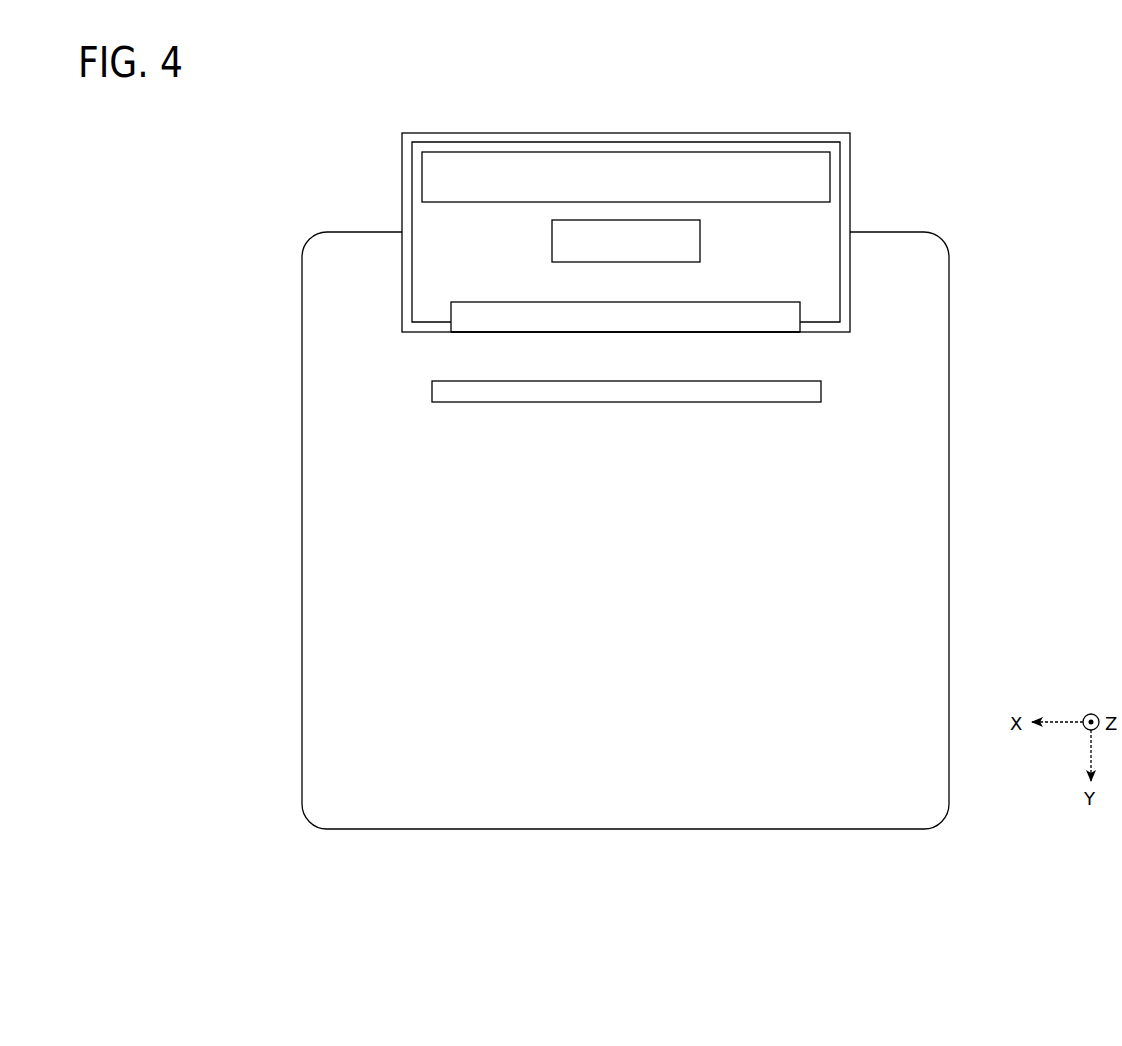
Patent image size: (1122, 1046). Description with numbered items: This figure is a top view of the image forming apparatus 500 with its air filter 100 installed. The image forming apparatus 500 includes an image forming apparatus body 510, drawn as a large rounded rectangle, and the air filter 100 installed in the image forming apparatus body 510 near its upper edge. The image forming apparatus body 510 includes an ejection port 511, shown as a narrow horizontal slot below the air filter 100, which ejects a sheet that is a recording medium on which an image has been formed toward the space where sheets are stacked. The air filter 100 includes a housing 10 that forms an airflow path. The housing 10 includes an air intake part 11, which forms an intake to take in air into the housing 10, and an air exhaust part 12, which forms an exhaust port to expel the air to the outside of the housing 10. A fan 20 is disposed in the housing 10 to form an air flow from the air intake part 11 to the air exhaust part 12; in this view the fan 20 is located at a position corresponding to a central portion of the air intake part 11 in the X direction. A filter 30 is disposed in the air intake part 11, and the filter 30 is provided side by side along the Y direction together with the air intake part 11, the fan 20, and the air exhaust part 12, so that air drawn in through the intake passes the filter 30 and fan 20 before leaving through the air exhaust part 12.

The image forming apparatus 500 is at (946, 75).
The air filter 100 is at (802, 113).
The housing 10 is at (852, 205).
The air intake part 11 is at (800, 333).
The air exhaust part 12 is at (810, 171).
The fan 20 is at (562, 242).
The filter 30 is at (462, 312).
The image forming apparatus body 510 is at (302, 530).
The ejection port 511 is at (442, 392).